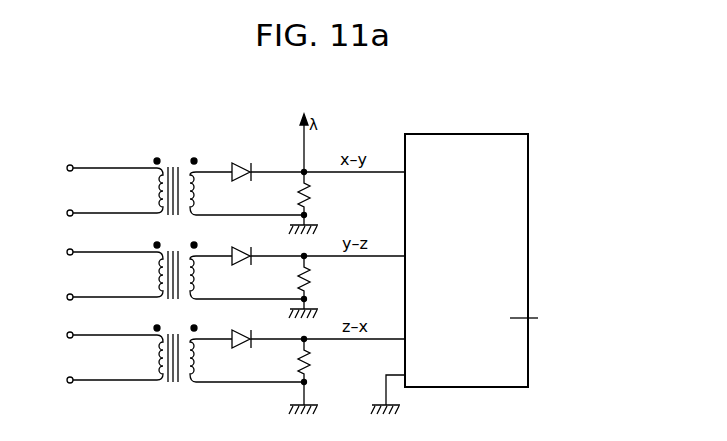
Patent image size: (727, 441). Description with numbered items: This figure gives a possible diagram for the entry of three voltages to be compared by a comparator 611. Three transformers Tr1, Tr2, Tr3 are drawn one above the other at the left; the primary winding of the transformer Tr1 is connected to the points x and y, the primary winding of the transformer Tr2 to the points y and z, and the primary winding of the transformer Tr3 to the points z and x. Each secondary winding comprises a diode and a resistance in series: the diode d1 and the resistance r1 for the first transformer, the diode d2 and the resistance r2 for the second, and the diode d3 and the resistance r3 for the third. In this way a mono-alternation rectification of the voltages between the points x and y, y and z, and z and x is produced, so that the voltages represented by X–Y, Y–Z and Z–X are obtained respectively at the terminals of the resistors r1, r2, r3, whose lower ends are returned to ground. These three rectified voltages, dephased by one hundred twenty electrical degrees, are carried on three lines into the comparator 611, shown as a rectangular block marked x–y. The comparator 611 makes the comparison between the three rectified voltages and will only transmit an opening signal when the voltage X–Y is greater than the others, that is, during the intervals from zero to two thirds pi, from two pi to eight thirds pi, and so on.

The comparator 611 is at (509, 252).
The transformer Tr1 is at (172, 165).
The transformer Tr2 is at (177, 265).
The transformer Tr3 is at (177, 348).
The diode d1 is at (237, 163).
The diode d2 is at (248, 244).
The diode d3 is at (248, 327).
The resistance r1 is at (310, 192).
The resistance r2 is at (312, 286).
The resistance r3 is at (312, 376).